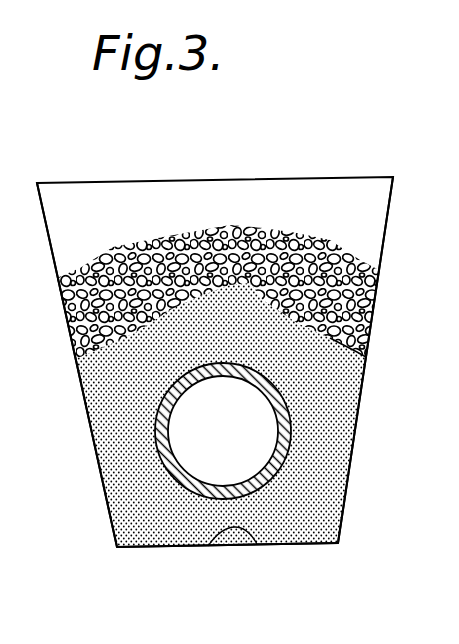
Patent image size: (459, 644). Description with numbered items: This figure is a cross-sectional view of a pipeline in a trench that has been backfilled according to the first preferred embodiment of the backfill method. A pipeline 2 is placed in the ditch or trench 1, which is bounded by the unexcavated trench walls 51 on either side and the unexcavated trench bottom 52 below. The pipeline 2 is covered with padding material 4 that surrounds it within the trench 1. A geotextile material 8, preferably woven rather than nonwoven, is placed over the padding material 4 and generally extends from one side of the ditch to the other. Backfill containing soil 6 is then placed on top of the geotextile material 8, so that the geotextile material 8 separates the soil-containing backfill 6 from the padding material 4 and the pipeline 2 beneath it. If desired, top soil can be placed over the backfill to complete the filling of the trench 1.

The trench 1 is at (155, 198).
The pipeline 2 is at (274, 437).
The padding material 4 is at (337, 452).
The backfill containing soil 6 is at (372, 312).
The geotextile material 8 is at (363, 355).
The unexcavated trench walls 51 is at (98, 467).
The unexcavated trench bottom 52 is at (208, 546).